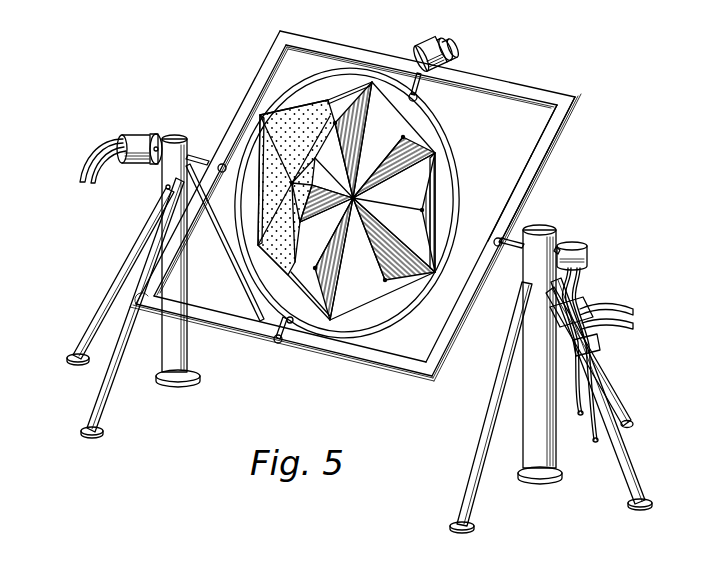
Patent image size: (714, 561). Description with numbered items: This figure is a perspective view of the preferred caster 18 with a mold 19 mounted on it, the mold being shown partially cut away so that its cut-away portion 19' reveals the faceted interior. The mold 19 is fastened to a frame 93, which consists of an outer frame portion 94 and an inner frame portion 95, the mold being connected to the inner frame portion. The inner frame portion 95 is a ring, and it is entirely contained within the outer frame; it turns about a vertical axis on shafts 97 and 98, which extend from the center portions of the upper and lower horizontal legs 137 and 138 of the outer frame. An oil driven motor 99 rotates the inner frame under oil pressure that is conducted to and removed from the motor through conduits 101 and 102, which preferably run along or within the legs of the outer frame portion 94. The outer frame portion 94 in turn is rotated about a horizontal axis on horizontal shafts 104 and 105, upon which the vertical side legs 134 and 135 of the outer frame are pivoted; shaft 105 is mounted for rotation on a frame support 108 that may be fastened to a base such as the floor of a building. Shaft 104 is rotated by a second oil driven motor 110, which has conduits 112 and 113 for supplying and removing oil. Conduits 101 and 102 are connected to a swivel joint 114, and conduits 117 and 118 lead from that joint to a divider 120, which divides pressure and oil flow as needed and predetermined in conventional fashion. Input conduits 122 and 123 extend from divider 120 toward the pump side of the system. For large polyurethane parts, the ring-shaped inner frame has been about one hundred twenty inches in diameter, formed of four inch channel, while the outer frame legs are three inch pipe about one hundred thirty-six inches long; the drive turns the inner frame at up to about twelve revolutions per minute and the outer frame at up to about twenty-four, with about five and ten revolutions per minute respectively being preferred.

The illumination apparatus 18 is at (633, 91).
The mold 19 is at (369, 201).
The reflector facets 19' is at (395, 201).
The frame 93 is at (378, 54).
The outer frame portion 94 is at (562, 145).
The inner frame portion 95 is at (407, 313).
The shaft 97 is at (421, 97).
The shaft 98 is at (278, 343).
The oil driven motor 99 is at (436, 46).
The conduit 101 is at (458, 52).
The conduit 102 is at (457, 64).
The shaft 104 is at (188, 140).
The shaft 105 is at (515, 250).
The frame support 108 is at (512, 308).
The oil driven motor 110 is at (135, 133).
The conduit 112 is at (80, 185).
The conduit 113 is at (93, 184).
The swivel joint 114 is at (588, 248).
The conduit 117 is at (592, 275).
The conduit 118 is at (595, 292).
The divider 120 is at (600, 345).
The input conduit 122 is at (580, 415).
The input conduit 123 is at (596, 443).
The vertical side leg 134 is at (259, 70).
The vertical side leg 135 is at (538, 212).
The upper horizontal leg 137 is at (545, 96).
The lower horizontal leg 138 is at (392, 371).